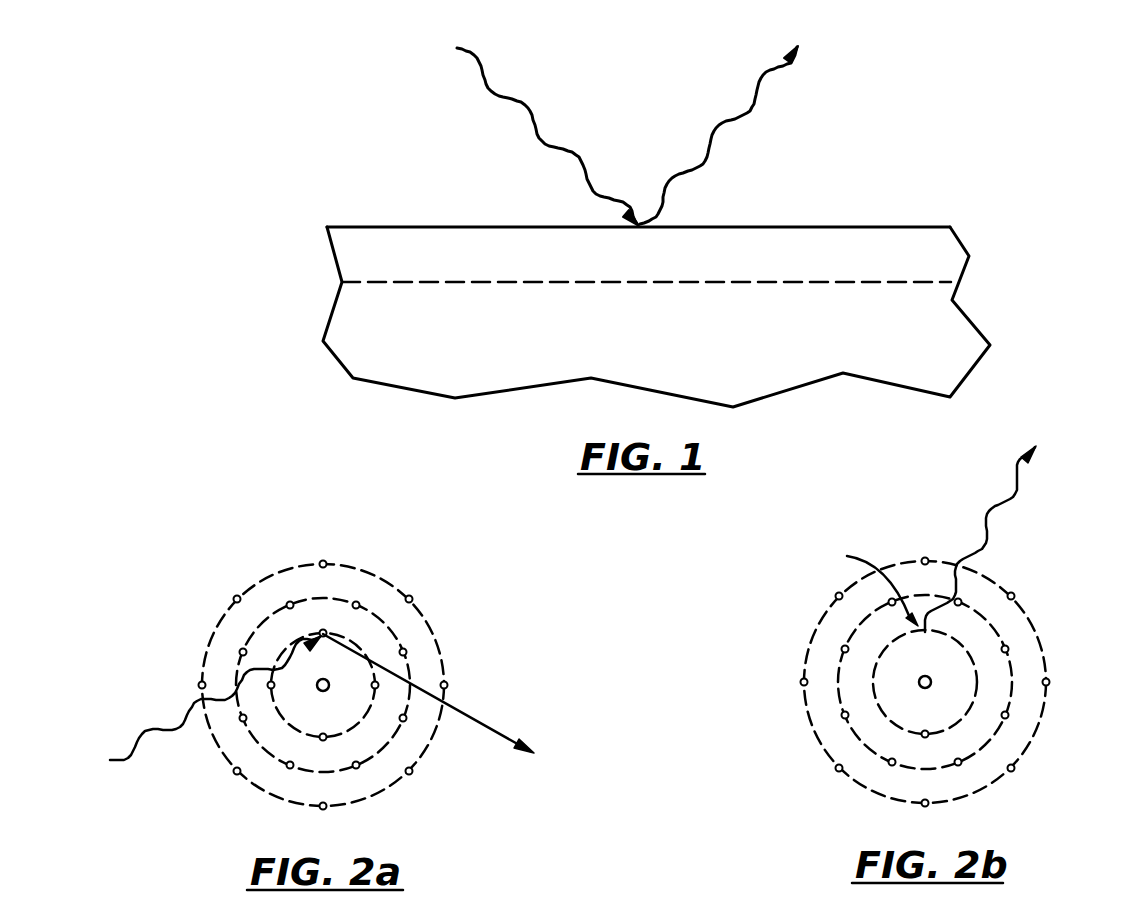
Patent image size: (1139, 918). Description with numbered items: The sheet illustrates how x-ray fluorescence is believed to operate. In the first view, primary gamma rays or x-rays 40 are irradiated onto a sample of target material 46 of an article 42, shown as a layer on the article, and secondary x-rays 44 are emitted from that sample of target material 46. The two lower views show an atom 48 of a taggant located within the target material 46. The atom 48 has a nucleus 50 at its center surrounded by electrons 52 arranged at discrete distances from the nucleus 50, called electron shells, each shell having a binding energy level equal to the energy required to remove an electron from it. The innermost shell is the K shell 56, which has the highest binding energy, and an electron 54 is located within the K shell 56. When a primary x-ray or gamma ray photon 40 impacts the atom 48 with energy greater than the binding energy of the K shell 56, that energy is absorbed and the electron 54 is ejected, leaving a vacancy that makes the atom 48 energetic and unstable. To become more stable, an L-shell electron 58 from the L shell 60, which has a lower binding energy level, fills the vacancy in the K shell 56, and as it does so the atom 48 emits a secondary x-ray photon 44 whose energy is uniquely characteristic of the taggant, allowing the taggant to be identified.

In FIG. 1, the primary x-ray or gamma ray photon 40 is at (535, 126).
In FIG. 2a, the primary x-ray or gamma ray photon 40 is at (165, 729).
In FIG. 1, the article 42 is at (930, 338).
In FIG. 1, the secondary x-ray photon 44 is at (733, 128).
In FIG. 2b, the secondary x-ray photon 44 is at (990, 507).
In FIG. 1, the target material 46 is at (920, 265).
In FIG. 2a, the atom 48 is at (447, 622).
In FIG. 2b, the atom 48 is at (1038, 603).
In FIG. 2a, the nucleus 50 is at (327, 692).
In FIG. 2b, the nucleus 50 is at (928, 688).
In FIG. 2a, the electrons 52 is at (323, 806).
In FIG. 2a, the electron 54 is at (321, 632).
In FIG. 2a, the K shell 56 is at (282, 720).
In FIG. 2b, the K shell 56 is at (890, 720).
In FIG. 2b, the L-shell electron 58 is at (864, 585).
In FIG. 2b, the L shell 60 is at (1011, 676).